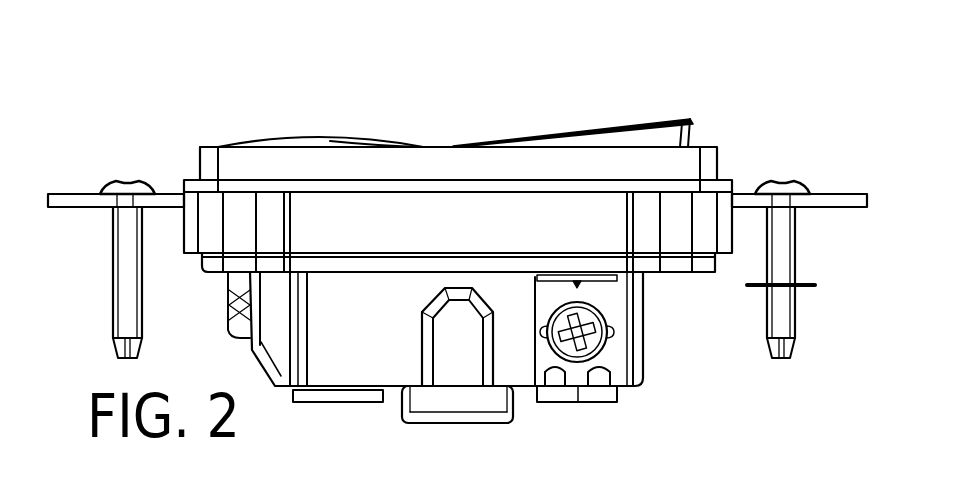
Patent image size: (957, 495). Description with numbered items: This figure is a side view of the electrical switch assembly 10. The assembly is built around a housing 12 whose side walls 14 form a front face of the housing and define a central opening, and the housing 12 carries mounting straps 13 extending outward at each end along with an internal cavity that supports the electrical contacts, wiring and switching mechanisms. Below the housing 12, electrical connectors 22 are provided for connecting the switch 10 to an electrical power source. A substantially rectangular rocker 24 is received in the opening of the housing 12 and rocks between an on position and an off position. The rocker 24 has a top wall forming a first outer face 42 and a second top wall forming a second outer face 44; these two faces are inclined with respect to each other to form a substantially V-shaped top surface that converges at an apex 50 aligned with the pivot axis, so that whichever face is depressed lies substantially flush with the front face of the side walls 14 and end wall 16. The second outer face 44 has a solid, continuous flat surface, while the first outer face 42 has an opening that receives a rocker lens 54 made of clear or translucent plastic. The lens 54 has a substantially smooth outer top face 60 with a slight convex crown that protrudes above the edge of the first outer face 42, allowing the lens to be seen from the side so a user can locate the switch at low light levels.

The electrical switch assembly 10 is at (728, 88).
The housing 12 is at (705, 274).
The mounting straps 13 is at (75, 194).
The side walls 14 is at (558, 165).
The end wall 16 is at (198, 160).
The electrical connectors 22 is at (603, 348).
The rocker 24 is at (692, 118).
The first outer face 42 is at (212, 147).
The second outer face 44 is at (612, 127).
The apex 50 is at (430, 145).
The rocker lens 54 is at (380, 147).
The outer top face 60 is at (330, 141).